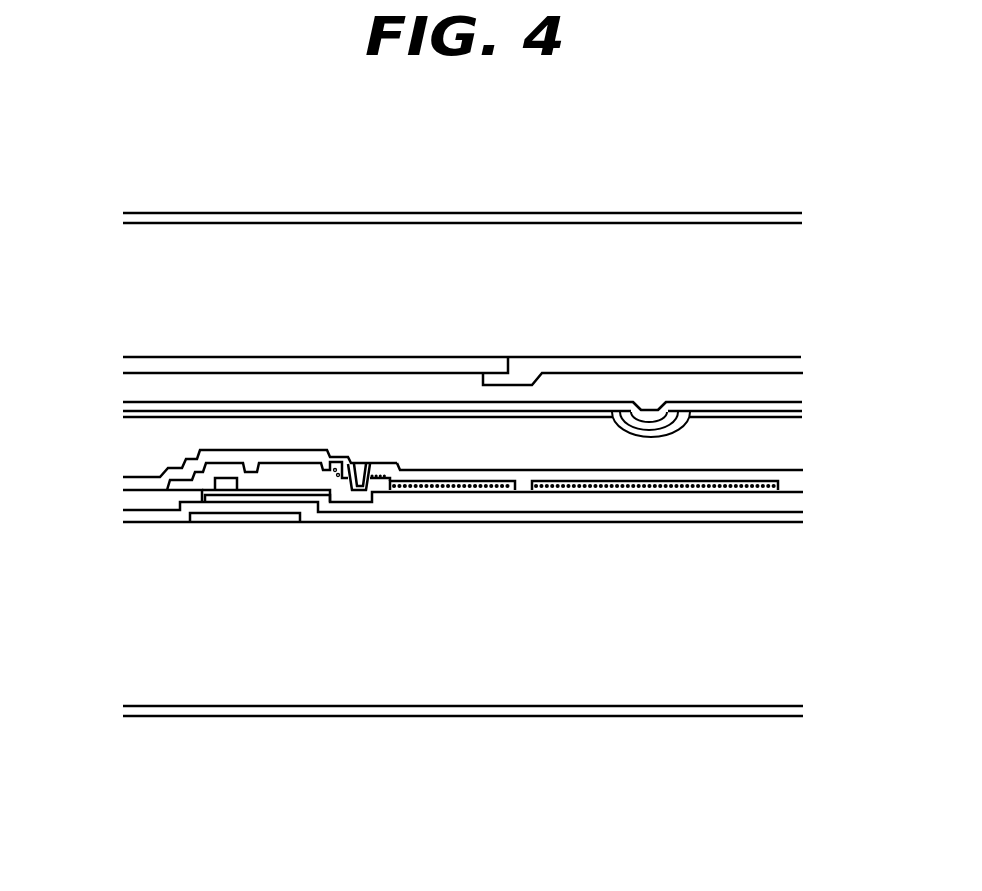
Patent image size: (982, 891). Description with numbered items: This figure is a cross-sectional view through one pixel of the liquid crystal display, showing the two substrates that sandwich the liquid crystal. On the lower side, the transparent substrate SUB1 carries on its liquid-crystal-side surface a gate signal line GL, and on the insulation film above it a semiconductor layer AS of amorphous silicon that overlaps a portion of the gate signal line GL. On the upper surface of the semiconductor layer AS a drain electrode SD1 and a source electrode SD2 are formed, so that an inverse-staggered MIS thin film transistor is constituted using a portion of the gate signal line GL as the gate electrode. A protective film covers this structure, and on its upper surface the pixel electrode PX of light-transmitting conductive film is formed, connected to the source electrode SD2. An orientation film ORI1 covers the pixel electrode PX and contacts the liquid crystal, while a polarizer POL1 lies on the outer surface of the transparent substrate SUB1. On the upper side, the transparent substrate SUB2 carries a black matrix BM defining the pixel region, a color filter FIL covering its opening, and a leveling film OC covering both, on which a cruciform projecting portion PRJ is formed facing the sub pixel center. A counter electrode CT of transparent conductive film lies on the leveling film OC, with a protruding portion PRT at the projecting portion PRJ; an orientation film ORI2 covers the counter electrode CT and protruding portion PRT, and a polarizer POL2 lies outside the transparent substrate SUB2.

The polarizer POL2 is at (617, 213).
The transparent substrate SUB2 is at (780, 257).
The cruciform projecting portion PRJ is at (650, 402).
The black matrix BM is at (123, 371).
The color filter FIL is at (792, 366).
The leveling film OC is at (790, 392).
The counter electrode CT is at (123, 410).
The orientation film ORI2 is at (803, 418).
The drain electrode SD1 is at (218, 488).
The orientation film ORI1 is at (798, 481).
The semiconductor layer AS is at (215, 489).
The gate signal line GL is at (218, 518).
The transparent substrate SUB1 is at (150, 617).
The source electrode SD2 is at (332, 503).
The pixel electrode PX is at (470, 492).
The protruding portion PRT is at (650, 420).
The polarizer POL1 is at (782, 710).